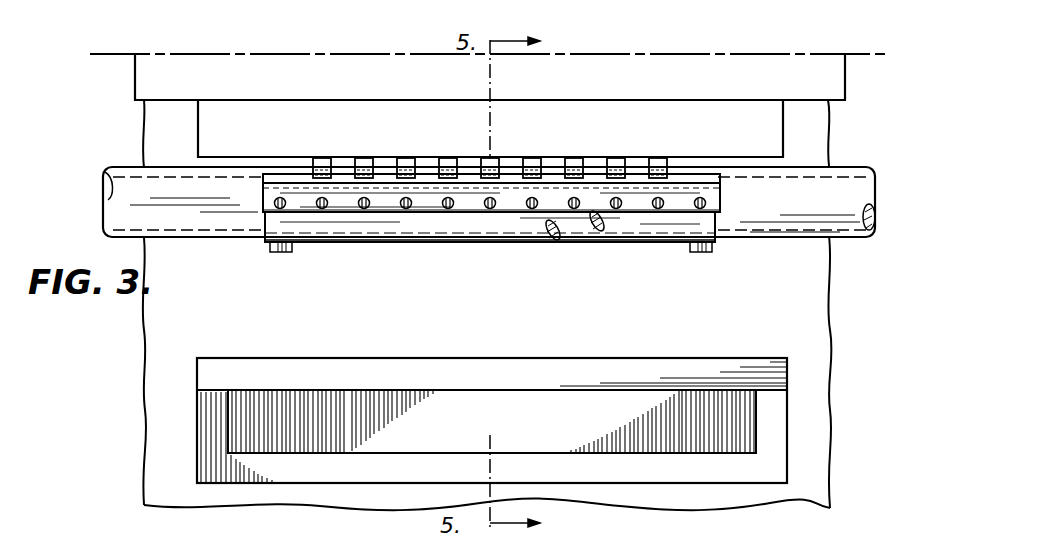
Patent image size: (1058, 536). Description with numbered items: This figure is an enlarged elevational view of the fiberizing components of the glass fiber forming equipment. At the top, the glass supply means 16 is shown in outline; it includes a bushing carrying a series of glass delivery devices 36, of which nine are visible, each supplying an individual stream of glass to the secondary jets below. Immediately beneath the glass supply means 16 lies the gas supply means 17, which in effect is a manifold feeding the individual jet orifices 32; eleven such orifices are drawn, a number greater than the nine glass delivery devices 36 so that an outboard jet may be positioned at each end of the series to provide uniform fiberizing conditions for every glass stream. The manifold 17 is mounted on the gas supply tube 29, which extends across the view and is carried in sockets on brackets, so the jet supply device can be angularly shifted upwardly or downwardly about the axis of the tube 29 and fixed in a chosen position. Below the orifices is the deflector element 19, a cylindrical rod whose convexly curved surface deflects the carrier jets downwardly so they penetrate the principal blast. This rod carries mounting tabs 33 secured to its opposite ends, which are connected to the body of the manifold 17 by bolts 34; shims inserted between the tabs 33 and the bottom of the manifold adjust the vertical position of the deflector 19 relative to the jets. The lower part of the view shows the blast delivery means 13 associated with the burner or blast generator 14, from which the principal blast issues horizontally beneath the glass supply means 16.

The blast delivery means 13 is at (423, 358).
The burner or blast generator 14 is at (150, 358).
The glass supply means 16 is at (133, 73).
The gas supply means 17 is at (263, 180).
The deflector element 19 is at (473, 242).
The gas supply tube 29 is at (871, 238).
The jet orifices 32 is at (317, 203).
The mounting tabs 33 is at (297, 240).
The bolts 34 is at (277, 252).
The glass delivery devices 36 is at (363, 166).